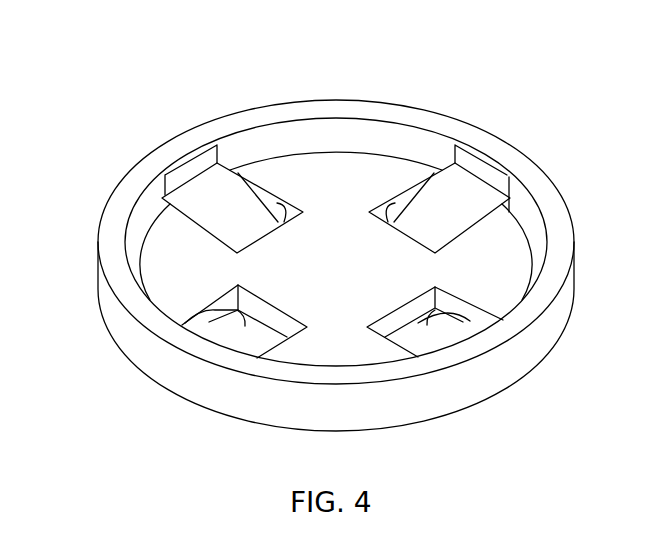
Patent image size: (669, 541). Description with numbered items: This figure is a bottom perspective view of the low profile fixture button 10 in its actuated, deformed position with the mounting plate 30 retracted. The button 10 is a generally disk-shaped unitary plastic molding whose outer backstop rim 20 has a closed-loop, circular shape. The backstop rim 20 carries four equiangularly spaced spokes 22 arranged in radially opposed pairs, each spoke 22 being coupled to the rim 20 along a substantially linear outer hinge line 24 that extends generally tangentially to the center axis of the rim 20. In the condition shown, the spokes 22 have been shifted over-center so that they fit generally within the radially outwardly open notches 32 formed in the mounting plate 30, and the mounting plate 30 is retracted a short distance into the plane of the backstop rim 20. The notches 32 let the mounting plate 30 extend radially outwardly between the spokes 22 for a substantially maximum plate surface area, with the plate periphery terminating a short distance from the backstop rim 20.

The low profile fixture button 10 is at (312, 217).
The outer backstop rim 20 is at (357, 117).
The spokes 22 is at (213, 220).
The outer hinge lines 24 is at (195, 183).
The mounting plate 30 is at (335, 232).
The notches 32 is at (277, 202).